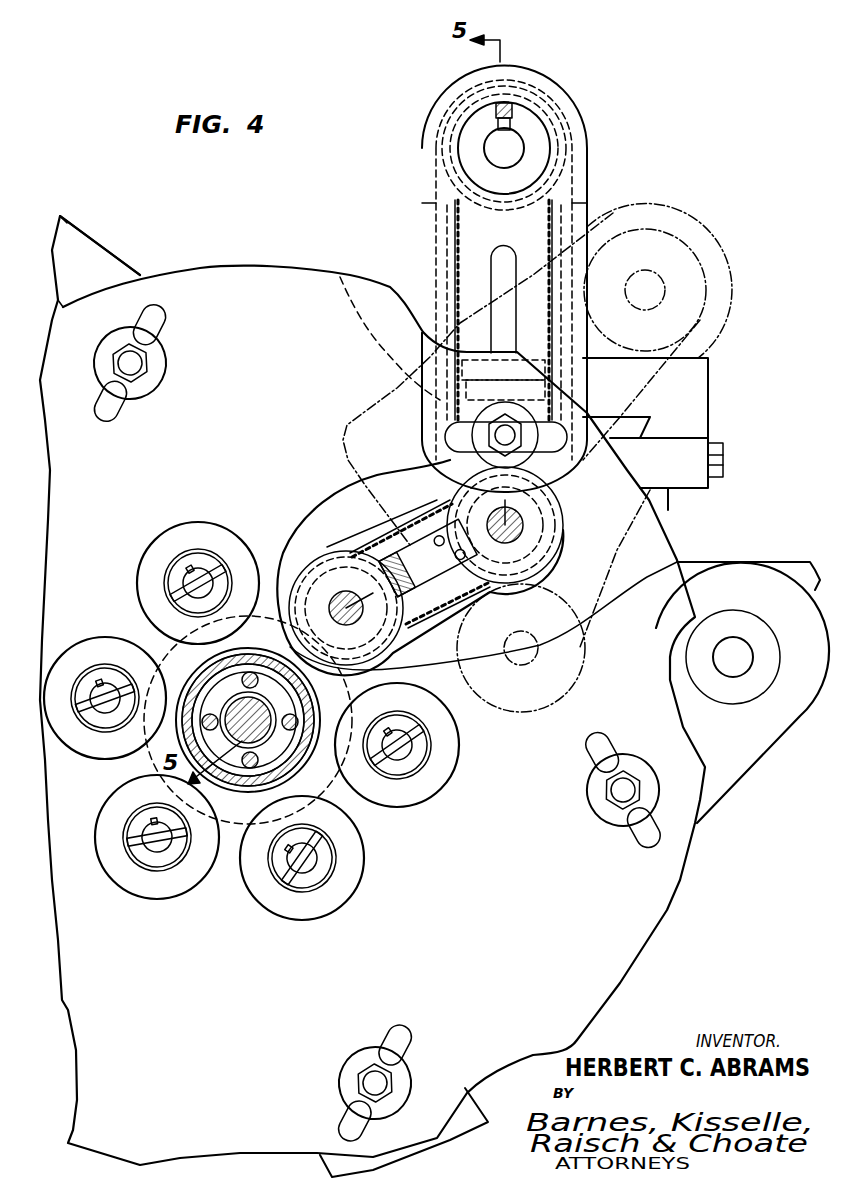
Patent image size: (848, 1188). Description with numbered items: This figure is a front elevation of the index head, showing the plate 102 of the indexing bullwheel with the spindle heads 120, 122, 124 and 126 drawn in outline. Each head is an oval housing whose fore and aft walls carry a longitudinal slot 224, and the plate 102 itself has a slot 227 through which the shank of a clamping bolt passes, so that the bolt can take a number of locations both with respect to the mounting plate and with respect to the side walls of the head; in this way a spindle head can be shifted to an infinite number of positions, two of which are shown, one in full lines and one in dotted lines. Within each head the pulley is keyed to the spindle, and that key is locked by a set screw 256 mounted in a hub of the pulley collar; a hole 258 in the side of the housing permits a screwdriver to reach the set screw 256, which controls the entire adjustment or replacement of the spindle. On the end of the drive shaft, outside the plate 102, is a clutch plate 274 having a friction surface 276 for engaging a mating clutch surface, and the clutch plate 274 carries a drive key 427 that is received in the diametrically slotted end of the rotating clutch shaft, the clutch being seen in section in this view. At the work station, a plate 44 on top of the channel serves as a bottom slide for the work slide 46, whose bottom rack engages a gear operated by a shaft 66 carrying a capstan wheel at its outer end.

The plate 102 is at (178, 275).
The head 120 is at (470, 1110).
The head 122 is at (732, 774).
The head 124 is at (421, 180).
The head 126 is at (97, 250).
The longitudinal slot 224 is at (497, 255).
The slot 227 is at (164, 334).
The set screw 256 is at (509, 120).
The hole 258 is at (568, 147).
The clutch plate 274 is at (188, 522).
The friction surface 276 is at (201, 530).
The drive key 427 is at (218, 566).
The plate 44 is at (697, 452).
The work slide 46 is at (706, 402).
The shaft 66 is at (723, 459).